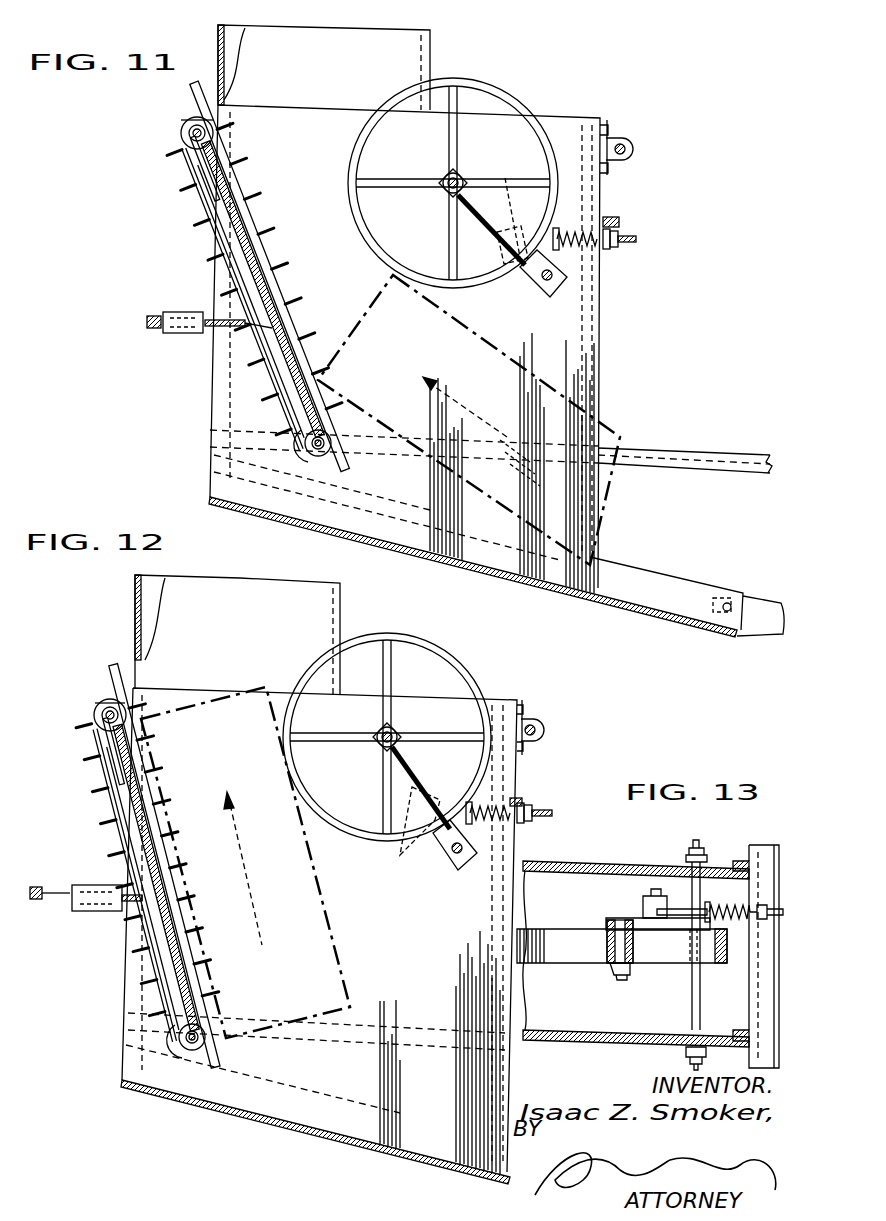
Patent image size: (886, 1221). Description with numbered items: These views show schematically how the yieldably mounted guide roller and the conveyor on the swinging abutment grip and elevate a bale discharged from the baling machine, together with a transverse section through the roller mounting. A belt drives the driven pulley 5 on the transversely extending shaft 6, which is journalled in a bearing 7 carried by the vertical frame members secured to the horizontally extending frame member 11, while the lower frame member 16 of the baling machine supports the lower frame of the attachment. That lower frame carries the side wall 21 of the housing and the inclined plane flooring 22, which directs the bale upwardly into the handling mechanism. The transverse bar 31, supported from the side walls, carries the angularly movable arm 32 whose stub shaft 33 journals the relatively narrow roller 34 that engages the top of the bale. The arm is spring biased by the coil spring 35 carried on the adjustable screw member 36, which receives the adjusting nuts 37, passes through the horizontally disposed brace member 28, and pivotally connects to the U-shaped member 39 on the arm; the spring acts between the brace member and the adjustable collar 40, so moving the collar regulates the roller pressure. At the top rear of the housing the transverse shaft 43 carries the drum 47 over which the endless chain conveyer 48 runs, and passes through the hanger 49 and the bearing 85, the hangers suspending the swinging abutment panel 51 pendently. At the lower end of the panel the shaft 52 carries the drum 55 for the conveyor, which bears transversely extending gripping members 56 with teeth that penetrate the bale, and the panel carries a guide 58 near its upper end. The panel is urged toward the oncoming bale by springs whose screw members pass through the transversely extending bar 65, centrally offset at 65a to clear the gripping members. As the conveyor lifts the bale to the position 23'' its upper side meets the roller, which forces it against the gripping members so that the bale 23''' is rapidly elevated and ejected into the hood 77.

In FIG. 12, the driven pulley 5 is at (197, 1050).
In FIG. 11, the transversely extending shaft 6 is at (630, 152).
In FIG. 12, the transversely extending shaft 6 is at (540, 727).
In FIG. 11, the bearing 7 is at (620, 140).
In FIG. 12, the bearing 7 is at (530, 720).
In FIG. 11, the horizontally extending frame member 11 is at (715, 470).
In FIG. 11, the lower frame member 16 is at (758, 622).
In FIG. 11, the side wall 21 is at (570, 520).
In FIG. 12, the side wall 21 is at (477, 1087).
In FIG. 11, the inclined plane flooring 22 is at (407, 557).
In FIG. 12, the inclined plane flooring 22 is at (322, 1132).
In FIG. 11, the bale 23'' is at (496, 420).
In FIG. 12, the bale 23''' is at (268, 862).
In FIG. 11, the horizontally disposed brace member 28 is at (620, 220).
In FIG. 12, the horizontally disposed brace member 28 is at (523, 800).
In FIG. 13, the horizontally disposed brace member 28 is at (763, 997).
In FIG. 11, the transverse bar 31 is at (552, 290).
In FIG. 12, the transverse bar 31 is at (457, 873).
In FIG. 13, the transverse bar 31 is at (697, 842).
In FIG. 11, the angularly movable arm 32 is at (485, 222).
In FIG. 12, the angularly movable arm 32 is at (448, 838).
In FIG. 13, the angularly movable arm 32 is at (618, 922).
In FIG. 11, the stub shaft 33 is at (447, 187).
In FIG. 12, the stub shaft 33 is at (377, 743).
In FIG. 13, the stub shaft 33 is at (610, 963).
In FIG. 11, the roller 34 is at (503, 92).
In FIG. 12, the roller 34 is at (450, 655).
In FIG. 11, the coil spring 35 is at (577, 250).
In FIG. 12, the coil spring 35 is at (492, 797).
In FIG. 13, the coil spring 35 is at (730, 907).
In FIG. 11, the adjustable screw member 36 is at (637, 239).
In FIG. 12, the adjustable screw member 36 is at (553, 820).
In FIG. 13, the adjustable screw member 36 is at (777, 927).
In FIG. 11, the adjusting nut 37 is at (607, 252).
In FIG. 12, the adjusting nut 37 is at (533, 813).
In FIG. 11, the U-shaped member 39 is at (508, 190).
In FIG. 12, the U-shaped member 39 is at (398, 856).
In FIG. 13, the U-shaped member 39 is at (643, 910).
In FIG. 11, the adjustable collar 40 is at (545, 268).
In FIG. 12, the adjustable collar 40 is at (466, 832).
In FIG. 13, the adjustable collar 40 is at (703, 893).
In FIG. 11, the transverse shaft 43 is at (185, 140).
In FIG. 12, the transverse shaft 43 is at (108, 700).
In FIG. 11, the drum 47 is at (195, 122).
In FIG. 12, the drum 47 is at (100, 720).
In FIG. 11, the endless chain conveyer 48 is at (320, 332).
In FIG. 12, the endless chain conveyer 48 is at (100, 780).
In FIG. 11, the hanger 49 is at (212, 205).
In FIG. 12, the hanger 49 is at (143, 763).
In FIG. 11, the swinging abutment panel 51 is at (240, 240).
In FIG. 12, the swinging abutment panel 51 is at (137, 920).
In FIG. 11, the shaft 52 is at (305, 455).
In FIG. 12, the shaft 52 is at (187, 1047).
In FIG. 11, the drum 55 is at (300, 445).
In FIG. 11, the gripping member 56 is at (268, 268).
In FIG. 12, the gripping member 56 is at (173, 817).
In FIG. 11, the guide 58 is at (210, 90).
In FIG. 12, the guide 58 is at (128, 680).
In FIG. 11, the transversely extending bar 65 is at (204, 312).
In FIG. 12, the transversely extending bar 65 is at (108, 892).
In FIG. 11, the offset portion 65a is at (165, 330).
In FIG. 12, the offset portion 65a is at (70, 910).
In FIG. 11, the hood 77 is at (400, 52).
In FIG. 12, the hood 77 is at (328, 615).
In FIG. 11, the bearing 85 is at (195, 165).
In FIG. 12, the bearing 85 is at (110, 737).